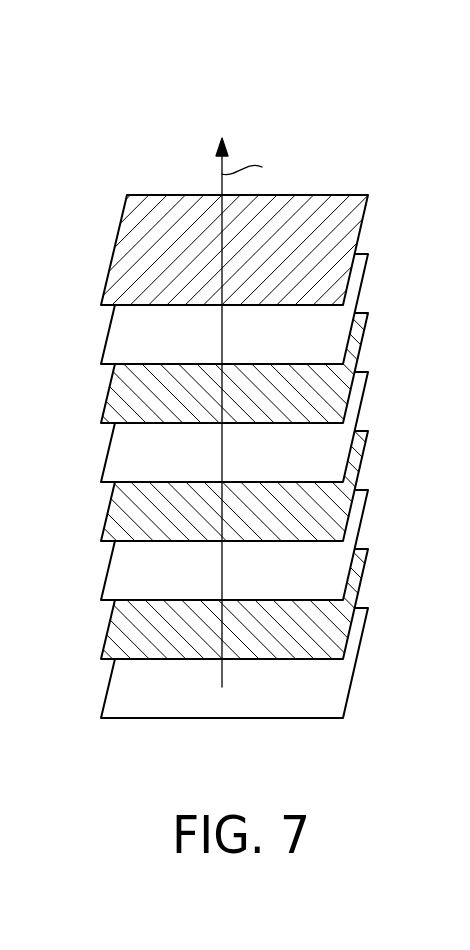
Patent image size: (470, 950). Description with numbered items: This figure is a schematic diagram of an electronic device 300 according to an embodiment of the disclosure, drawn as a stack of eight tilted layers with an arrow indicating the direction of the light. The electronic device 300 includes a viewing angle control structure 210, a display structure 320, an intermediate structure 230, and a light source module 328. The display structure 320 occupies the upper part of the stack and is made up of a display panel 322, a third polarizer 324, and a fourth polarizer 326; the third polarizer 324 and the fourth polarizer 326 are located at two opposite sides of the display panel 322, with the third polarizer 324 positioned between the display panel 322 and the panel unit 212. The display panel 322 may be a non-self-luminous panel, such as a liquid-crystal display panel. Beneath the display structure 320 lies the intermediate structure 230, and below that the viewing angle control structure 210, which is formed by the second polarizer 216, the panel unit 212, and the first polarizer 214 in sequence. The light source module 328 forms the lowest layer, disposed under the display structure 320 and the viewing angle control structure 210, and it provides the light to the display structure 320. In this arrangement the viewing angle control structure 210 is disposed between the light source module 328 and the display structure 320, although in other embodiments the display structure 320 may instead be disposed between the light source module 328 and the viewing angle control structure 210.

The electronic device 300 is at (235, 388).
The display structure 320 is at (235, 215).
The display panel 322 is at (340, 330).
The third polarizer 324 is at (340, 400).
The fourth polarizer 326 is at (342, 225).
The intermediate structure 230 is at (122, 451).
The viewing angle control structure 210 is at (234, 545).
The second polarizer 216 is at (340, 512).
The panel unit 212 is at (340, 568).
The first polarizer 214 is at (340, 628).
The light source module 328 is at (340, 690).